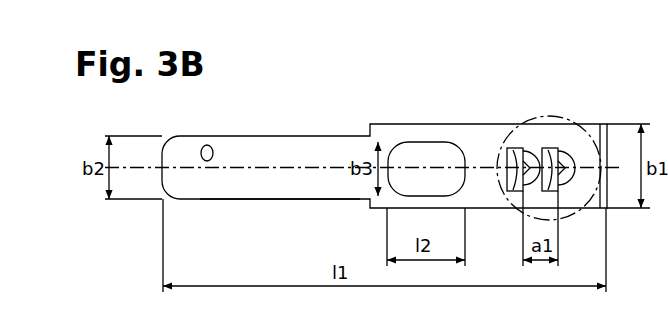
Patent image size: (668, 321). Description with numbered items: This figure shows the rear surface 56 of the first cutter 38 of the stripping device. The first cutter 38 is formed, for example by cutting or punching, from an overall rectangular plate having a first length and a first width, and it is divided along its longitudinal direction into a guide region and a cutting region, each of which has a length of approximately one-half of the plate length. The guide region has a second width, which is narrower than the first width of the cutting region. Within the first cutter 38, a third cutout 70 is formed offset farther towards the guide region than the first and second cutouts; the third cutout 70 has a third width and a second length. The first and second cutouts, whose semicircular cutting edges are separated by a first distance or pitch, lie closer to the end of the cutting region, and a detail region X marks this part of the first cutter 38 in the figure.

The first cutter 38 is at (334, 124).
The third cutout 70 is at (428, 146).
The rear surface 56 is at (285, 183).
The detail region X is at (566, 121).